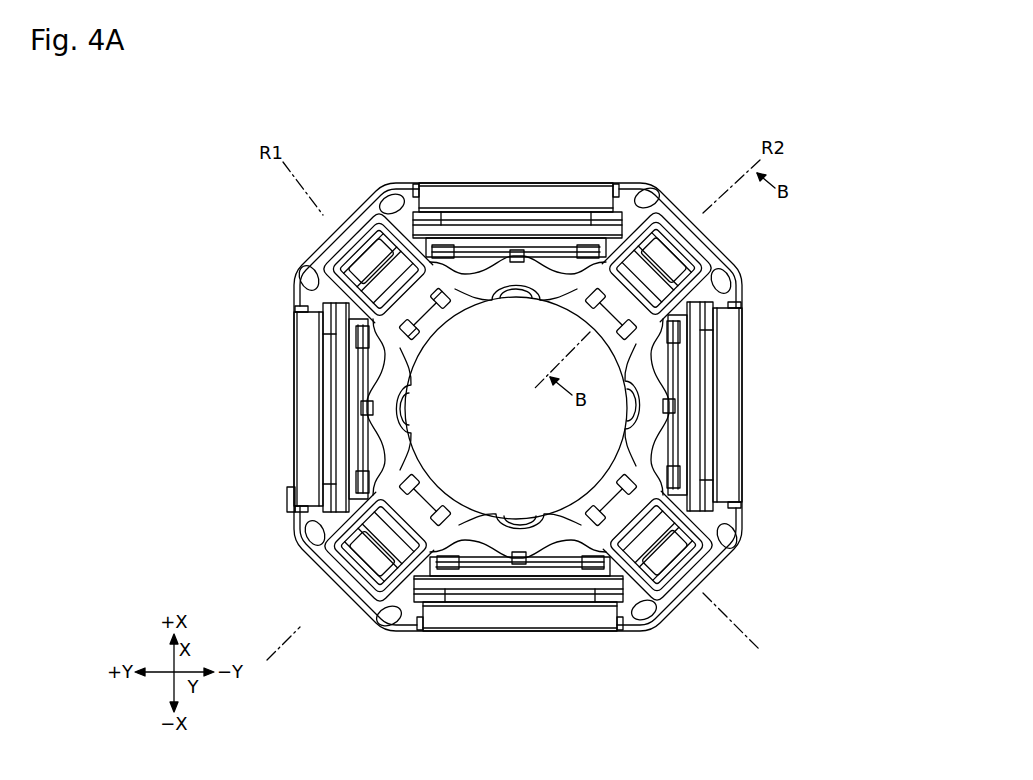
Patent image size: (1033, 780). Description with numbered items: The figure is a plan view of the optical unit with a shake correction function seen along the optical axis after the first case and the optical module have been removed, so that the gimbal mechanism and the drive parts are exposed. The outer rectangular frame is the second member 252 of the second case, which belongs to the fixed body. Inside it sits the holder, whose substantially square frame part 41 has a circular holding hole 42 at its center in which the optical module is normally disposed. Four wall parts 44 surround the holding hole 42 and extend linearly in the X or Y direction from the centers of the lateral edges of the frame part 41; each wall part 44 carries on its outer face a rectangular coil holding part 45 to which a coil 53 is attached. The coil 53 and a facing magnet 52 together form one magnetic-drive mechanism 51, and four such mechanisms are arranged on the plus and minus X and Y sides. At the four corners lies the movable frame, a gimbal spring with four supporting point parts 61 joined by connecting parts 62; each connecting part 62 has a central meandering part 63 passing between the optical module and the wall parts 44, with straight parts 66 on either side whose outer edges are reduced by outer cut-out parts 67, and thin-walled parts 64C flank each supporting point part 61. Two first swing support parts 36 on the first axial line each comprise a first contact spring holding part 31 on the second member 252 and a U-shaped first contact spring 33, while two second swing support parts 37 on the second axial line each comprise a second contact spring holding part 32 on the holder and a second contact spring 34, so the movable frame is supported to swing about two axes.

The second member 252 is at (740, 542).
The frame part 41 is at (393, 512).
The holding hole 42 is at (290, 493).
The wall parts 44 is at (523, 239).
The coil holding part 45 is at (505, 222).
The magnetic-drive mechanism 51 is at (385, 294).
The magnet 52 is at (450, 194).
The coil 53 is at (478, 230).
The connecting part 62 is at (631, 512).
The meandering part 63 is at (653, 408).
The straight part 66 is at (688, 312).
The outer cut-out part 67 is at (700, 318).
The first swing support part 36 is at (522, 424).
The second swing support part 37 is at (519, 424).
The first contact spring holding part 31 is at (377, 255).
The second contact spring holding part 32 is at (652, 235).
The first contact spring 33 is at (350, 225).
The second contact spring 34 is at (672, 250).
The supporting point part 61 is at (337, 262).
The thin-walled parts 64C is at (648, 183).